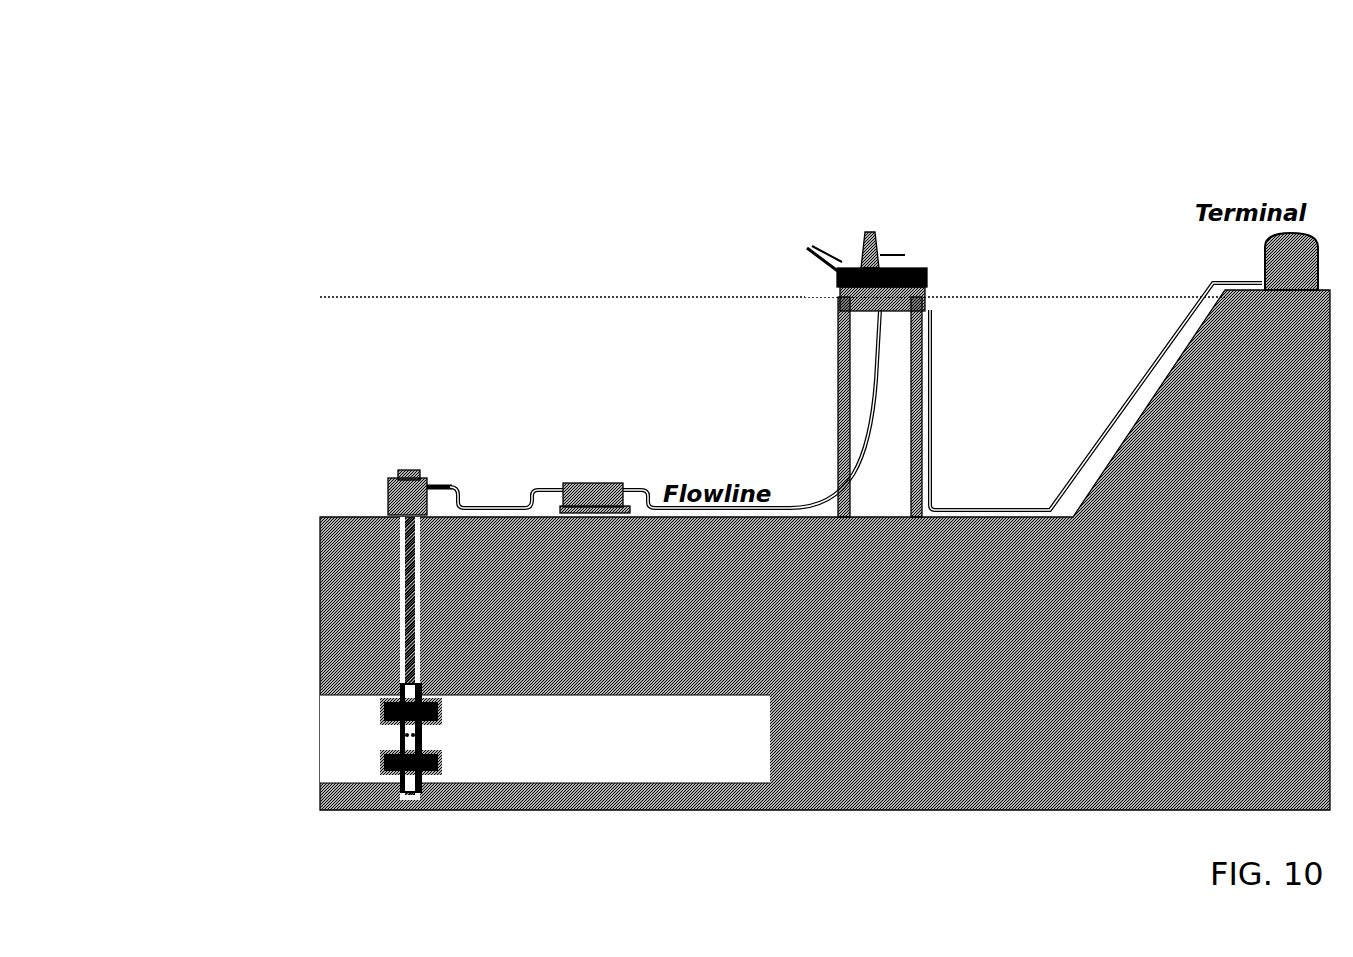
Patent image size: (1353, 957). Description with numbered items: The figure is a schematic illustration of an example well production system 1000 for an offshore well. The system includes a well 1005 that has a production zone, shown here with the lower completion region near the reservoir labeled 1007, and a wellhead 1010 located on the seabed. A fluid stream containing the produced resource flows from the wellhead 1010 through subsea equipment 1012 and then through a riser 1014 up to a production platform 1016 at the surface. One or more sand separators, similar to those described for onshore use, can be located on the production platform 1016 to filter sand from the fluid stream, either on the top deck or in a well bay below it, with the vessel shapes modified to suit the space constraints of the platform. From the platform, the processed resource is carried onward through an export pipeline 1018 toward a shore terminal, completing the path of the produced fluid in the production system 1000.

The well production system 1000 is at (186, 74).
The well 1005 is at (383, 675).
The reservoir perforations / completion 1007 is at (382, 728).
The wellhead 1010 is at (330, 400).
The subsea equipment 1012 is at (517, 420).
The riser 1014 is at (740, 413).
The production platform 1016 is at (770, 175).
The export pipeline 1018 is at (990, 365).